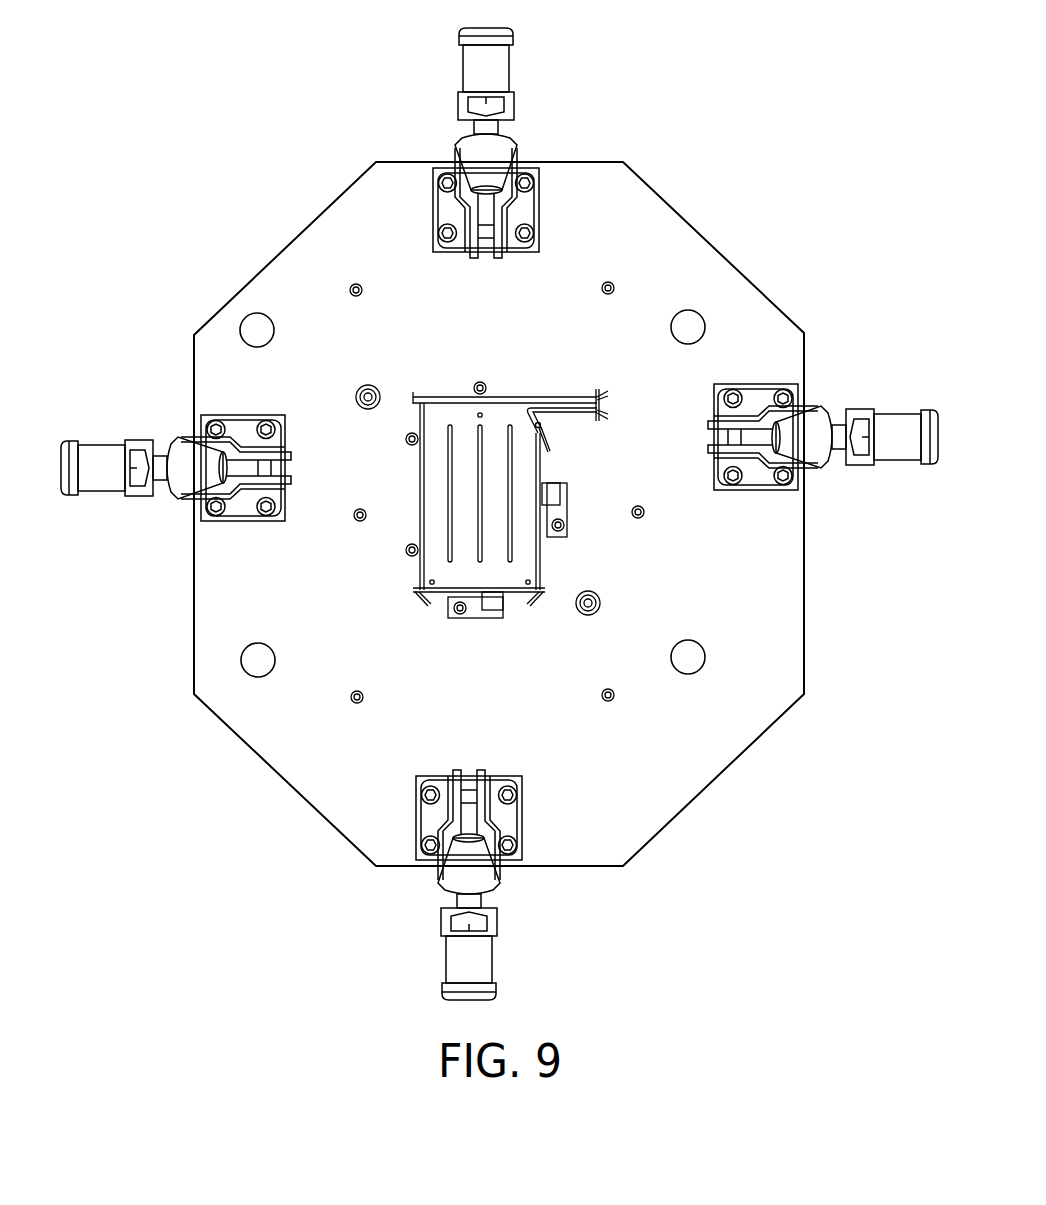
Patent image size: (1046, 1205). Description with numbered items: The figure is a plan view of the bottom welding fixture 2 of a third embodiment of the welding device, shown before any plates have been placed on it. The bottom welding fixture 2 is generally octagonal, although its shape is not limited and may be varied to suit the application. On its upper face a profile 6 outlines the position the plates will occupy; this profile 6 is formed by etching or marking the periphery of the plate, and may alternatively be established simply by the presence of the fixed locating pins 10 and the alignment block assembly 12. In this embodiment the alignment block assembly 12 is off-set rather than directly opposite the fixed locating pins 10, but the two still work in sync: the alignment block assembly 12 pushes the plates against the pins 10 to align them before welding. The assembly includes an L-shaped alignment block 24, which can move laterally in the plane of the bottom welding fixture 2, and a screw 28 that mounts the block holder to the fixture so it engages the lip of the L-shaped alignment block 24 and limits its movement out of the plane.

The bottom welding fixture 2 is at (222, 108).
The profile 6 is at (440, 397).
The fixed locating pins 10 is at (405, 439).
The alignment block assembly 12 is at (568, 504).
The L-shaped alignment block 24 is at (553, 490).
The screw 28 is at (560, 531).